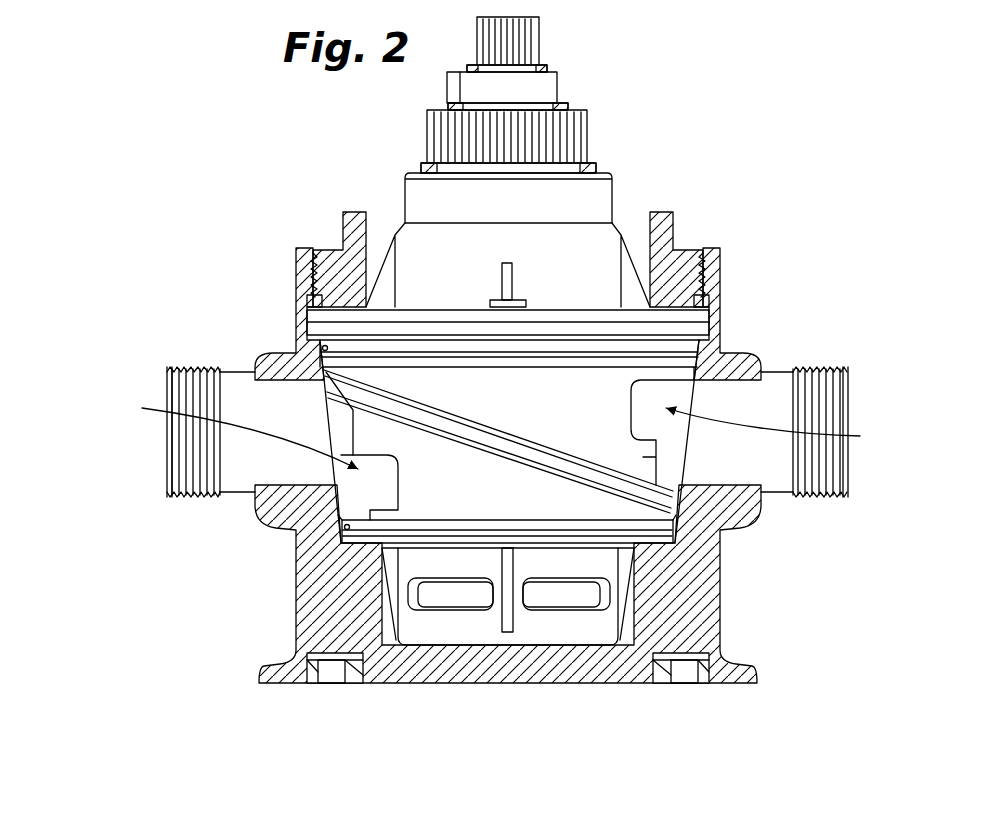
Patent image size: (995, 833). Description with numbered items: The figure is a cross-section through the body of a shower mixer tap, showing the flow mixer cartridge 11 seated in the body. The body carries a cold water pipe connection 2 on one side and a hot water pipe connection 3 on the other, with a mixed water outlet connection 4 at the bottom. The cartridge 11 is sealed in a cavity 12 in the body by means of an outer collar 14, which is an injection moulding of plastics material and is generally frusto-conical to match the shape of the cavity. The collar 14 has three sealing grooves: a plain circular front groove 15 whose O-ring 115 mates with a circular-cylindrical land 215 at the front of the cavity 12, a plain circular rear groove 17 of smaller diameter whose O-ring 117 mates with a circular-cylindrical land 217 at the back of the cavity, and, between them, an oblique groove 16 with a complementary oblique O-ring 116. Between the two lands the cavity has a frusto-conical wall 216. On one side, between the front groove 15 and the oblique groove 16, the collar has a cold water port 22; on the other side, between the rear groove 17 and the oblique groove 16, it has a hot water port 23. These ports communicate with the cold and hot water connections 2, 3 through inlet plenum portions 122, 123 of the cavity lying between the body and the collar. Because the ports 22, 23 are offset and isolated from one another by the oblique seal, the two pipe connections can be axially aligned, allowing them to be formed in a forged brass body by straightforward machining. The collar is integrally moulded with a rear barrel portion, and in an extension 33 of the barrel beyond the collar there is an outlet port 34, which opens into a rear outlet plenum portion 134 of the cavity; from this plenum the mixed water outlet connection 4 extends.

The flow mixer cartridge 11 is at (668, 90).
The front sealing groove 15 is at (652, 348).
The circular-cylindrical land 215 is at (313, 345).
The hot water pipe connection 3 is at (176, 367).
The O-ring 115 is at (700, 352).
The cold water pipe connection 2 is at (833, 368).
The inlet plenum portion 123 is at (337, 420).
The hot water port 23 is at (251, 458).
The cavity 12 is at (673, 375).
The frusto-conical wall 216 is at (337, 468).
The cold water port 22 is at (782, 430).
The oblique sealing groove 16 is at (528, 450).
The inlet plenum portion 122 is at (660, 445).
The O-ring 117 is at (340, 537).
The outer collar 14 is at (675, 497).
The rear sealing groove 17 is at (350, 543).
The O-ring 116 is at (675, 515).
The circular-cylindrical land 217 is at (680, 540).
The rear outlet plenum portion 134 is at (387, 633).
The mixed water outlet connection 4 is at (697, 620).
The extension of the barrel 33 is at (448, 625).
The outlet port 34 is at (570, 602).